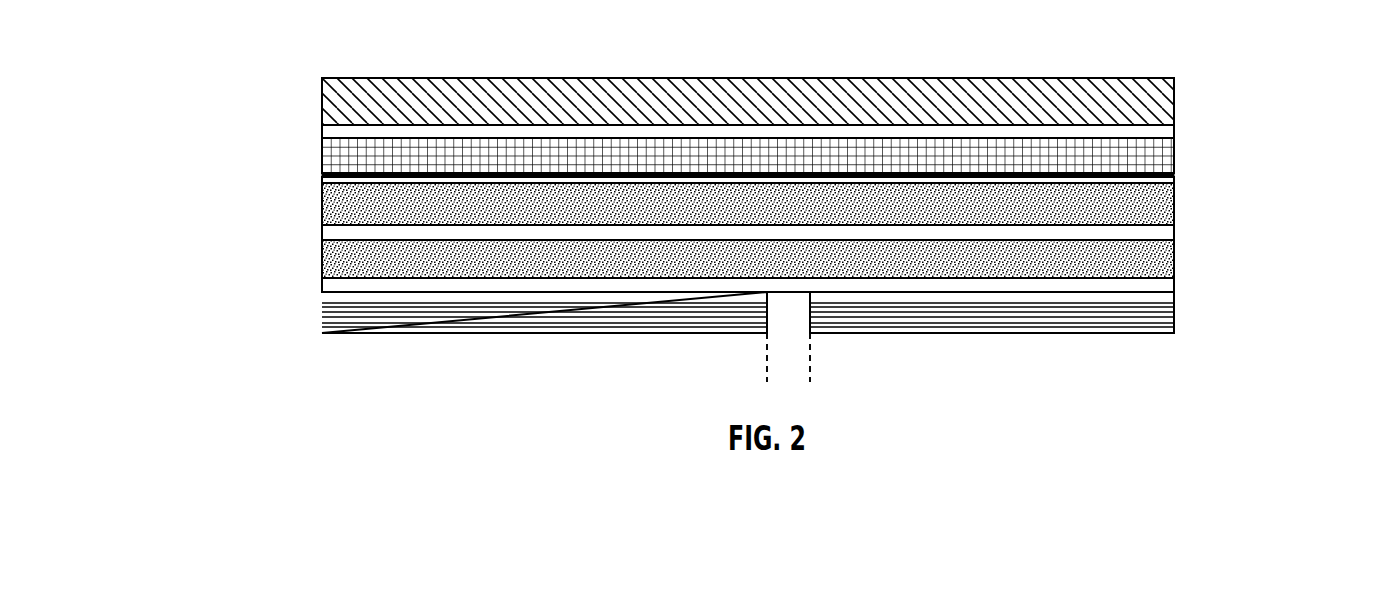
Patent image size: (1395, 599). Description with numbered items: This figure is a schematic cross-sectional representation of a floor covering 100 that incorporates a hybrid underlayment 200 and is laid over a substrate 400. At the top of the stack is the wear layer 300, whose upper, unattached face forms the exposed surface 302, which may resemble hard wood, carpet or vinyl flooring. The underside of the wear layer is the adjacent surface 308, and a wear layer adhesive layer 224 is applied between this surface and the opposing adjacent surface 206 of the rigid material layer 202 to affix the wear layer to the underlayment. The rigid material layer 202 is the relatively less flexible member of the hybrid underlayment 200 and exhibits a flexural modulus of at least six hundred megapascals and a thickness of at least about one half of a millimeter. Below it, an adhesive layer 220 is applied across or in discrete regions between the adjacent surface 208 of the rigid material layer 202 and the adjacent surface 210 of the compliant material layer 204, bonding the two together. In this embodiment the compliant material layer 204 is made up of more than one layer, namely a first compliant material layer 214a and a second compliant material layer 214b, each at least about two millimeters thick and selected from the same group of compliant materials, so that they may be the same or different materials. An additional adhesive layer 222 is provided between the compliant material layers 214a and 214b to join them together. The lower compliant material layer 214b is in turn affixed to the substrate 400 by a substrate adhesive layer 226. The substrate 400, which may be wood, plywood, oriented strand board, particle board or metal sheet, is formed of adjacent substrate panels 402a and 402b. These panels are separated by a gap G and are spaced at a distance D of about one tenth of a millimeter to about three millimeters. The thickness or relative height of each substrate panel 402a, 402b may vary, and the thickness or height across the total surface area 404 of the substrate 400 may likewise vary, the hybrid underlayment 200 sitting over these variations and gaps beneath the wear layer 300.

The floor covering 100 is at (322, 292).
The hybrid underlayment 200 is at (322, 139).
The wear layer 300 is at (405, 78).
The substrate 400 is at (322, 307).
The exposed surface 302 is at (525, 68).
The adjacent surface of wear layer 308 is at (809, 125).
The wear layer adhesive layer 224 is at (1174, 128).
The rigid material layer 202 is at (1174, 158).
The adjacent surface of rigid material layer 206 is at (1053, 138).
The adjacent surface of rigid material layer 208 is at (952, 173).
The adhesive layer 220 is at (1174, 178).
The compliant material layer 204 is at (1270, 278).
The compliant material layer 214a is at (1174, 218).
The additional adhesive layer 222 is at (1174, 232).
The compliant material layer 214b is at (1174, 262).
The adjacent surface of compliant material layer 210 is at (1007, 179).
The substrate adhesive layer 226 is at (1174, 287).
The substrate panel 402a is at (517, 317).
The substrate panel 402b is at (1083, 315).
The total surface area 404 is at (662, 290).
The gap G is at (795, 357).
The distance D is at (738, 375).